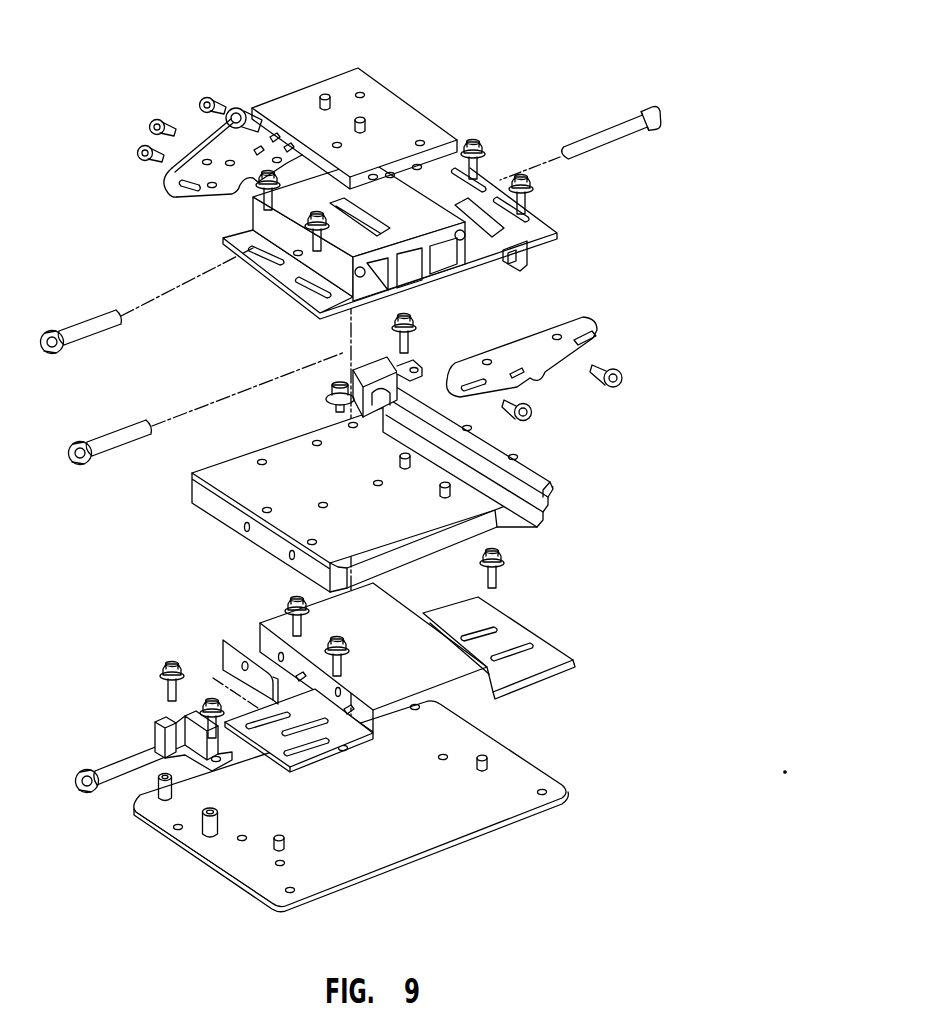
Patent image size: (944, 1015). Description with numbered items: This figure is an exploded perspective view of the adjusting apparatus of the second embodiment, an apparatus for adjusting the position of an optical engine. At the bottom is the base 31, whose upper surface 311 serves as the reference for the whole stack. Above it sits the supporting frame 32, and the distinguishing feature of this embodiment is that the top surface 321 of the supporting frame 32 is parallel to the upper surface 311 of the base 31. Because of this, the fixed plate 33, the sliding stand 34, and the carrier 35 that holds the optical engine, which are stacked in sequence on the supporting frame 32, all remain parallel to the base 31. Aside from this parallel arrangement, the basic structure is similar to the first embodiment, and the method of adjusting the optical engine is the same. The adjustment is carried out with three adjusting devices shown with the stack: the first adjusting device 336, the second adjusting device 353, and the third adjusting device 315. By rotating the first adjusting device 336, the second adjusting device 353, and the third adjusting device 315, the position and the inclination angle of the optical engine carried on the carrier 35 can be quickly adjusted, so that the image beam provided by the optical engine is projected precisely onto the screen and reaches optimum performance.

The base 31 is at (200, 877).
The upper surface 311 is at (403, 843).
The third adjusting device 315 is at (130, 760).
The supporting frame 32 is at (553, 630).
The top surface 321 is at (433, 677).
The fixed plate 33 is at (237, 552).
The first adjusting device 336 is at (130, 437).
The sliding stand 34 is at (277, 320).
The carrier 35 is at (428, 98).
The second adjusting device 353 is at (614, 141).